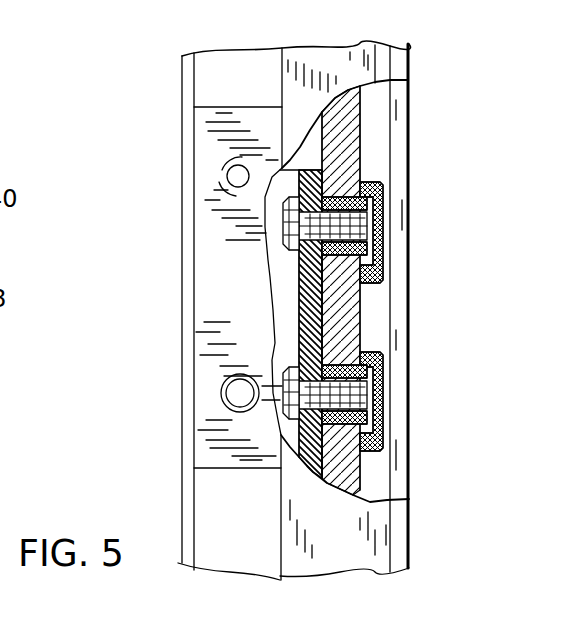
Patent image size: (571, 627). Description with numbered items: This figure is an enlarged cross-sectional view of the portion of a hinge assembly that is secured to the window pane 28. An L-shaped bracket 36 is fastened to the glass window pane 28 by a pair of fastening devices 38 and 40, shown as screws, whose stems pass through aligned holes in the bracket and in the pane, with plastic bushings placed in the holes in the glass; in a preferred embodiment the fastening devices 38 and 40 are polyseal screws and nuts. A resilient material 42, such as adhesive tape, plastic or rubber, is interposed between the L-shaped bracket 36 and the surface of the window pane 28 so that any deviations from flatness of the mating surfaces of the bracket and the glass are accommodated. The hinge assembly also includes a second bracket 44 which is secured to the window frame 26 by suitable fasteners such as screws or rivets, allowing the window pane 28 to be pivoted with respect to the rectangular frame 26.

The window frame 26 is at (225, 47).
The window pane 28 is at (358, 319).
The L-shaped bracket 36 is at (307, 300).
The fastening device 38 is at (375, 397).
The fastening device 40 is at (355, 230).
The resilient material 42 is at (312, 452).
The second bracket 44 is at (213, 205).